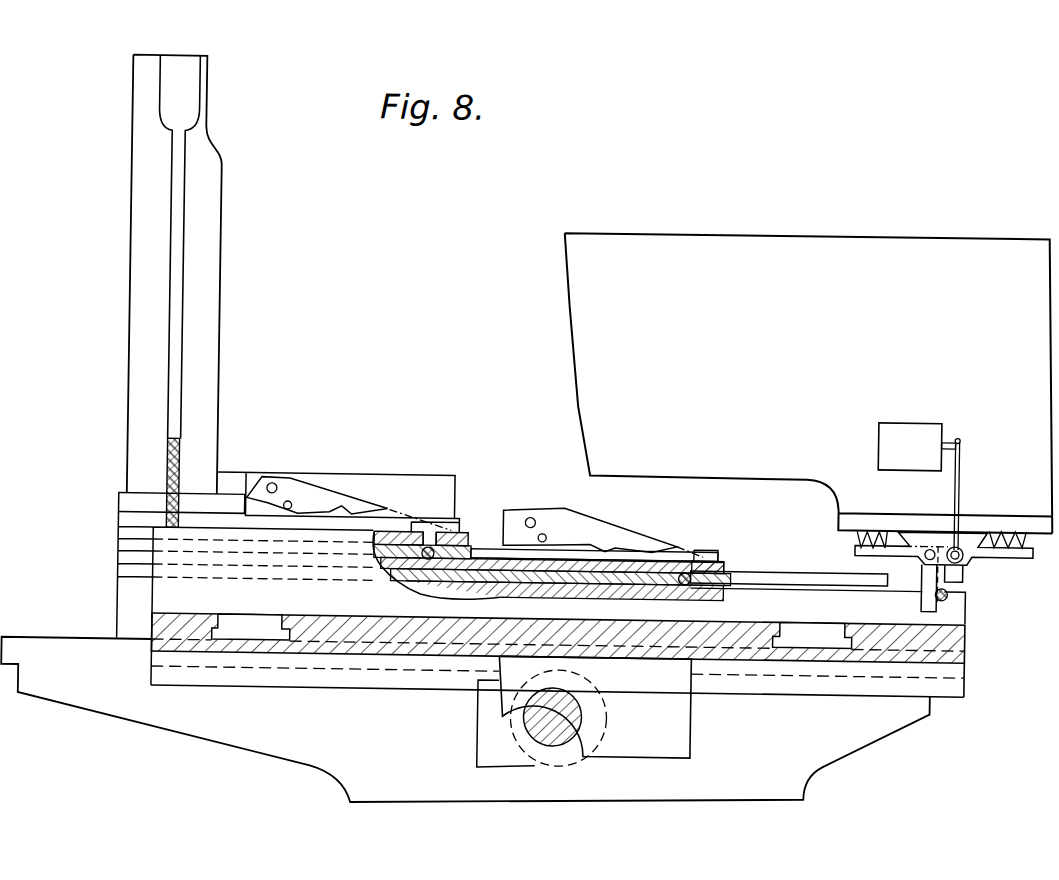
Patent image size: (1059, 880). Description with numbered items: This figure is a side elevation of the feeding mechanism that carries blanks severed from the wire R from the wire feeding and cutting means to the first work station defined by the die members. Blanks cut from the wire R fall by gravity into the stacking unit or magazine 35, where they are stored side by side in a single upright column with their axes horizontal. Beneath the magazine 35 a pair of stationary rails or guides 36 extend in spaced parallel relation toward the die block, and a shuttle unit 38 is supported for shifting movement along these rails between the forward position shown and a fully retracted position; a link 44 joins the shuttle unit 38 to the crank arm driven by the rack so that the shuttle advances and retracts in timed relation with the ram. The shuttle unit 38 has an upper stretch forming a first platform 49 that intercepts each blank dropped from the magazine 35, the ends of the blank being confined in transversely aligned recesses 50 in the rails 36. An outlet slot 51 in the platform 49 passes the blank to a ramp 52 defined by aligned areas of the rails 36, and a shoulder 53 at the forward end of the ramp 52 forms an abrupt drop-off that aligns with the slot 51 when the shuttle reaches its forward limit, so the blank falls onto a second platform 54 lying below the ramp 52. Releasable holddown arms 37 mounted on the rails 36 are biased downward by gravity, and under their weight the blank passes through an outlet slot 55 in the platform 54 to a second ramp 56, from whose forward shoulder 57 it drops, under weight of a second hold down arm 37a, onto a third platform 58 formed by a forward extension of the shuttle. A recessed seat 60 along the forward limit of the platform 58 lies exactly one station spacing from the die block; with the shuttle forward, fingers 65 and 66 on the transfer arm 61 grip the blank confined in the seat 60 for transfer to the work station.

The wire R is at (164, 465).
The stacking unit or magazine 35 is at (231, 407).
The stationary rails or guides 36 is at (188, 521).
The releasable holddown arms 37 is at (320, 497).
The second hold down arm 37a is at (594, 524).
The shuttle unit 38 is at (305, 708).
The link 44 is at (480, 722).
The first landing area or platform 49 is at (219, 524).
The recesses 50 is at (116, 518).
The outlet slot 51 is at (428, 529).
The ramp 52 is at (399, 536).
The shoulder 53 is at (431, 556).
The second platform 54 is at (477, 553).
The outlet slot 55 is at (692, 547).
The second ramp 56 is at (644, 555).
The shoulder 57 is at (686, 577).
The third platform or landing area 58 is at (789, 571).
The recessed seat 60 is at (950, 583).
The arm 61 is at (587, 393).
The finger 65 is at (924, 584).
The finger 66 is at (954, 563).